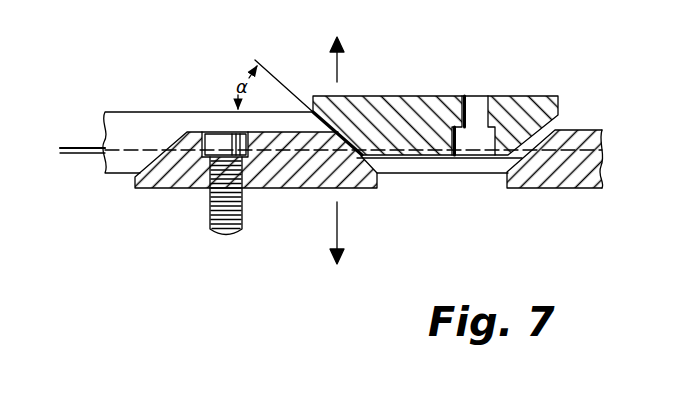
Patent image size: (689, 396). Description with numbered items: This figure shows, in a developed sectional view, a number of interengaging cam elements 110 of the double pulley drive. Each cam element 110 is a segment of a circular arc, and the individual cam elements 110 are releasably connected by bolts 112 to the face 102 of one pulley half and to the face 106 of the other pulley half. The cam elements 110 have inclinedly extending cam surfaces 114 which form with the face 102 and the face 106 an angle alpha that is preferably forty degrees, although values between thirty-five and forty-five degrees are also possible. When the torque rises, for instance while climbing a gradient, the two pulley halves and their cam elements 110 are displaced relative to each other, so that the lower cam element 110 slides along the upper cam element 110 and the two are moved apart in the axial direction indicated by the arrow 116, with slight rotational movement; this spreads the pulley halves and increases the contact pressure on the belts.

The face of the one pulley half 102 is at (87, 145).
The face of the other pulley half 106 is at (88, 159).
The cam element 110 is at (310, 197).
The bolt 112 is at (210, 203).
The cam surface 114 is at (345, 122).
The arrow 116 is at (338, 60).